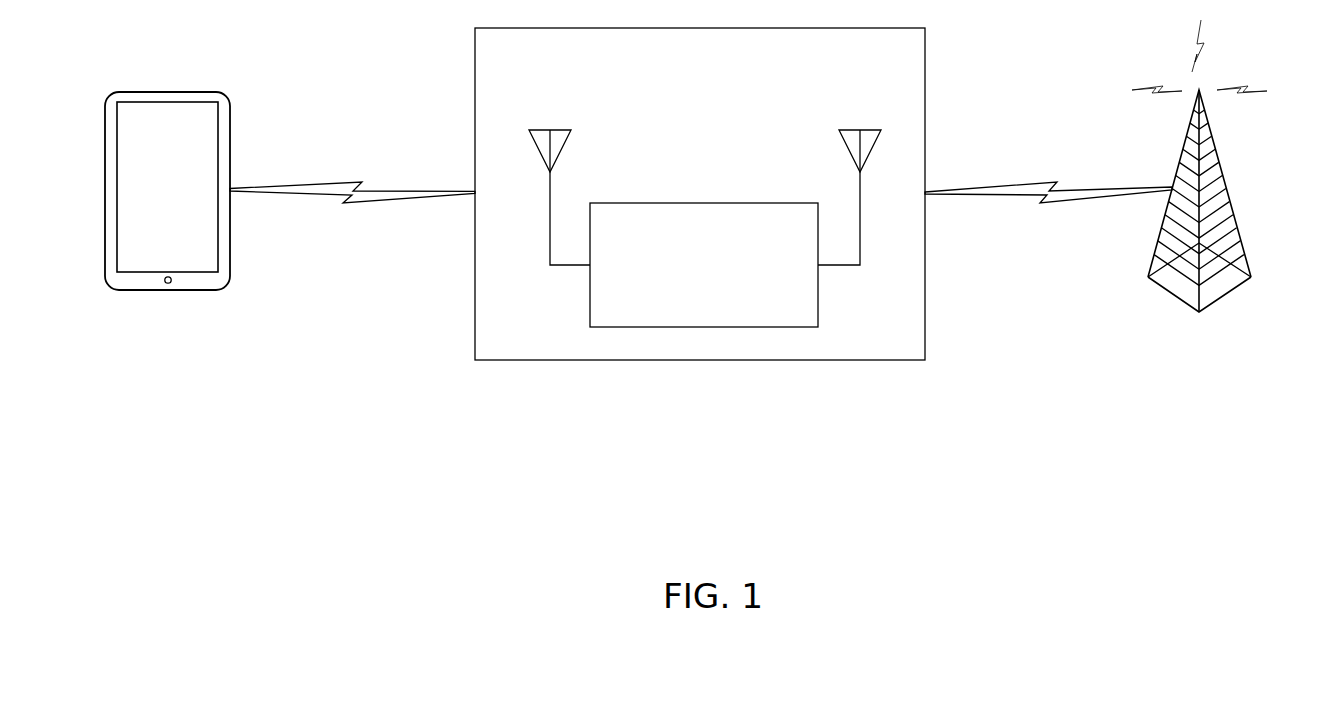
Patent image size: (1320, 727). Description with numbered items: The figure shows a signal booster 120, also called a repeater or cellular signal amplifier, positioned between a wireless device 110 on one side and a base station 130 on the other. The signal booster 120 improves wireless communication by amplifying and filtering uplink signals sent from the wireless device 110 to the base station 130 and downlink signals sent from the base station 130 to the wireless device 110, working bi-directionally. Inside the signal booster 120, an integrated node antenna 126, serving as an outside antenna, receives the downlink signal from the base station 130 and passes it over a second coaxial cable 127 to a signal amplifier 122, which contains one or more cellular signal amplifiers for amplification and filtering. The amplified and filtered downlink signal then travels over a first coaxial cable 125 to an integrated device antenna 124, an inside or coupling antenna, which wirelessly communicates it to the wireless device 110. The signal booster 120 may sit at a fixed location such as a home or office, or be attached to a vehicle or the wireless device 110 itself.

The wireless device 110 is at (160, 92).
The signal booster 120 is at (817, 67).
The signal amplifier 122 is at (684, 291).
The integrated device antenna 124 is at (550, 137).
The first coaxial cable 125 is at (540, 218).
The integrated node antenna 126 is at (860, 137).
The second coaxial cable 127 is at (863, 218).
The base station 130 is at (1222, 150).